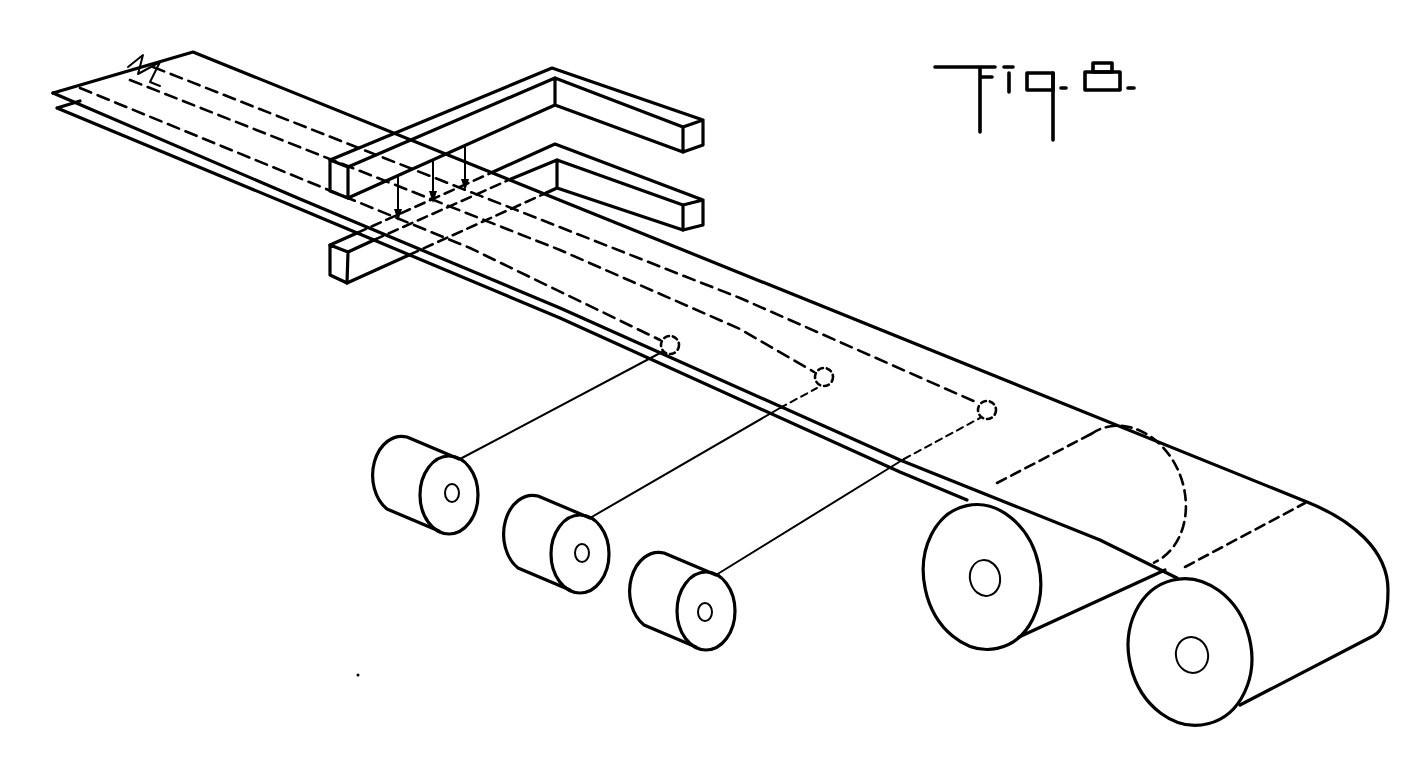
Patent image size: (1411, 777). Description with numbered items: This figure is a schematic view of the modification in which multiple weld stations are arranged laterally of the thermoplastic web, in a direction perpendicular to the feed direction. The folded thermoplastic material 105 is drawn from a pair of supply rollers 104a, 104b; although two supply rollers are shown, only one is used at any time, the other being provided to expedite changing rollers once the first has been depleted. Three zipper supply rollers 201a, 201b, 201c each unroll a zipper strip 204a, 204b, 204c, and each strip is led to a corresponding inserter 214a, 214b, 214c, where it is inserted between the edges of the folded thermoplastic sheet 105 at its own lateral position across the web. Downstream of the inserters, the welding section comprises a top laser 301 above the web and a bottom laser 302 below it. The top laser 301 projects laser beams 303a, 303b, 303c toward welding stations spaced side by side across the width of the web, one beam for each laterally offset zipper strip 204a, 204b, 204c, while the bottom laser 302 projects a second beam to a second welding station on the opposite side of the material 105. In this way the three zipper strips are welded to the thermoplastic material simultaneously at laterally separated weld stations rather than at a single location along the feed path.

The folded thermoplastic sheet 105 is at (1057, 395).
The supply roller 104a is at (985, 645).
The supply roller 104b is at (1177, 707).
The zipper supply roller 201a is at (422, 525).
The zipper supply roller 201b is at (558, 588).
The zipper supply roller 201c is at (677, 640).
The zipper strip 204a is at (515, 432).
The zipper strip 204b is at (638, 492).
The zipper strip 204c is at (768, 541).
The inserter 214a is at (643, 354).
The inserter 214b is at (800, 382).
The inserter 214c is at (965, 411).
The top laser 301 is at (706, 130).
The bottom laser 302 is at (706, 217).
The first laser beam 303a is at (393, 206).
The first laser beam 303b is at (434, 200).
The first laser beam 303c is at (466, 188).